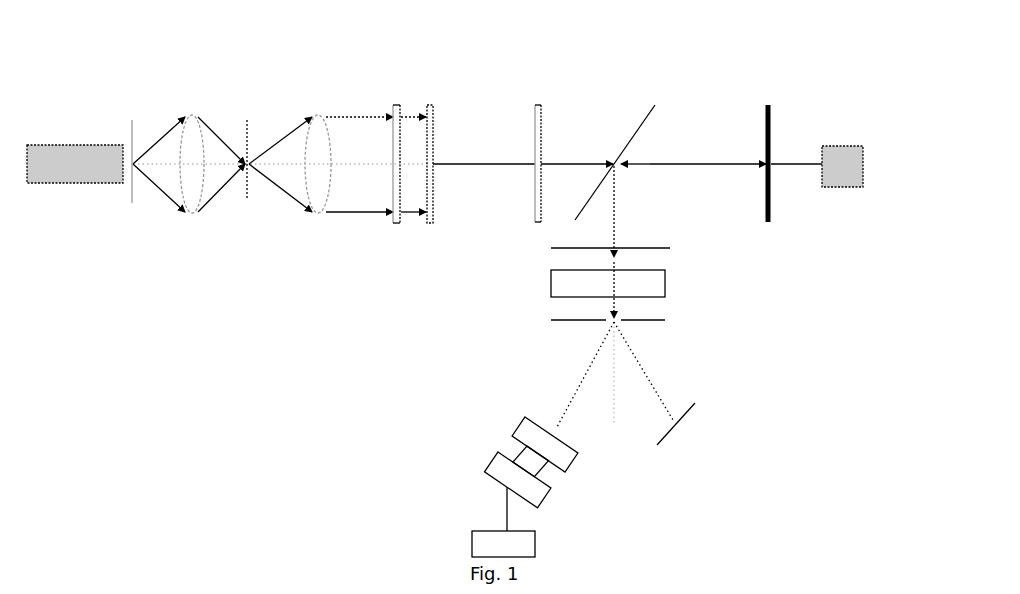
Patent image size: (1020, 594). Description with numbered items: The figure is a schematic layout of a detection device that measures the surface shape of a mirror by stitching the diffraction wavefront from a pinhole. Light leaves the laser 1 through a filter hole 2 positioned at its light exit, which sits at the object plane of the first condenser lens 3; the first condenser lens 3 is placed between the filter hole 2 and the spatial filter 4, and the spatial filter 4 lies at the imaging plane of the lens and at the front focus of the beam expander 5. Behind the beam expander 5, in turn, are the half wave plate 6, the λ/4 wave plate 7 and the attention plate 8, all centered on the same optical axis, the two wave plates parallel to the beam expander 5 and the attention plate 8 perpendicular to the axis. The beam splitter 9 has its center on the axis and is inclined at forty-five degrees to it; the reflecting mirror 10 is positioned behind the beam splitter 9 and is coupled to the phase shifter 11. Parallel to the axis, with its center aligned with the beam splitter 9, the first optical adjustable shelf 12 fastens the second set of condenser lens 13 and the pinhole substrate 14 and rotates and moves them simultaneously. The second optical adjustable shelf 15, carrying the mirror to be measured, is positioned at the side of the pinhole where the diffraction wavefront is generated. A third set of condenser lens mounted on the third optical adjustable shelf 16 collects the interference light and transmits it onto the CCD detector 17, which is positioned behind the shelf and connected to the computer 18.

The laser 1 is at (71, 135).
The filter hole 2 is at (132, 110).
The first condenser lens 3 is at (193, 113).
The spatial filter 4 is at (247, 120).
The beam expander 5 is at (319, 112).
The half wave plate 6 is at (394, 105).
The λ/4 wave plate 7 is at (430, 105).
The attention plate 8 is at (538, 102).
The beam splitter 9 is at (611, 133).
The reflecting mirror 10 is at (768, 100).
The phase shifter 11 is at (845, 117).
The first optical adjustable shelf 12 is at (692, 248).
The second set of condenser lens 13 is at (692, 282).
The pinhole substrate 14 is at (692, 320).
The second optical adjustable shelf 15 is at (693, 422).
The third optical adjustable shelf 16 is at (495, 423).
The CCD detector 17 is at (484, 470).
The computer 18 is at (450, 531).